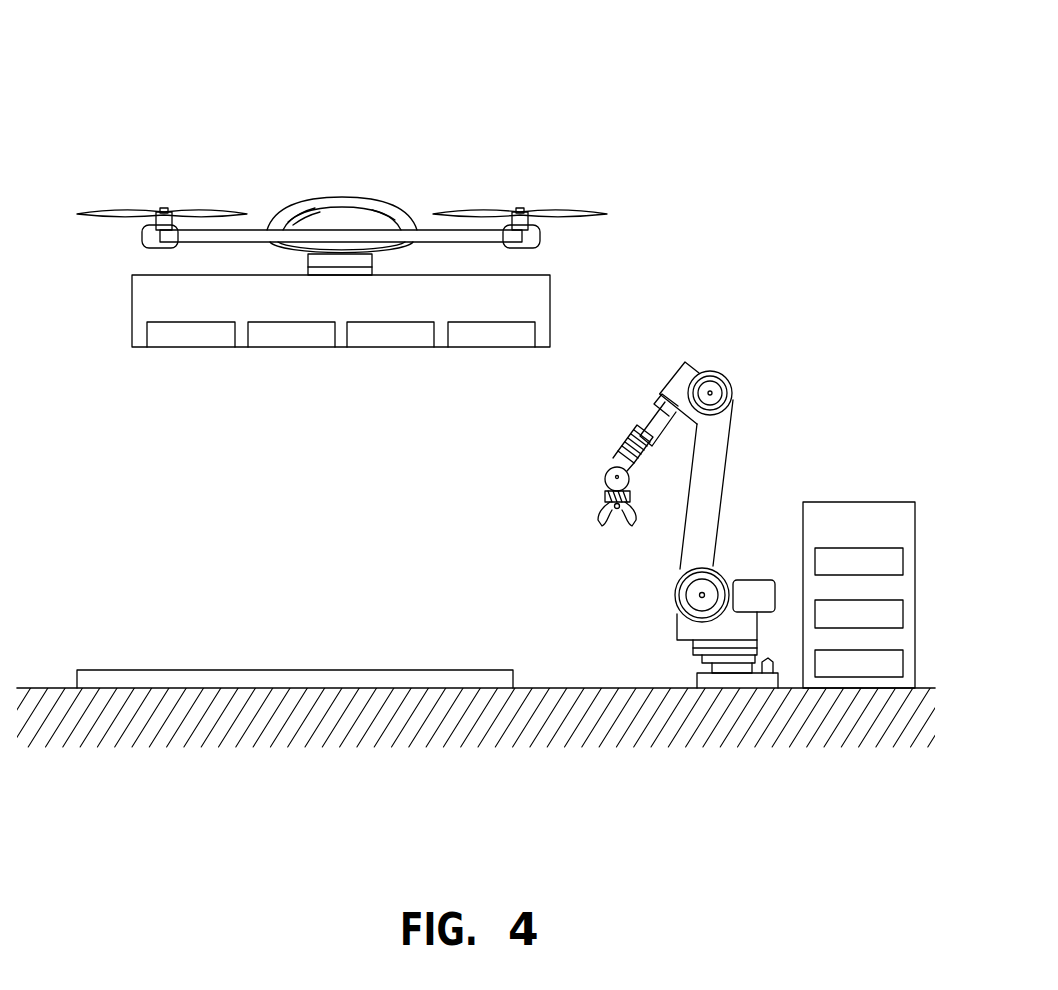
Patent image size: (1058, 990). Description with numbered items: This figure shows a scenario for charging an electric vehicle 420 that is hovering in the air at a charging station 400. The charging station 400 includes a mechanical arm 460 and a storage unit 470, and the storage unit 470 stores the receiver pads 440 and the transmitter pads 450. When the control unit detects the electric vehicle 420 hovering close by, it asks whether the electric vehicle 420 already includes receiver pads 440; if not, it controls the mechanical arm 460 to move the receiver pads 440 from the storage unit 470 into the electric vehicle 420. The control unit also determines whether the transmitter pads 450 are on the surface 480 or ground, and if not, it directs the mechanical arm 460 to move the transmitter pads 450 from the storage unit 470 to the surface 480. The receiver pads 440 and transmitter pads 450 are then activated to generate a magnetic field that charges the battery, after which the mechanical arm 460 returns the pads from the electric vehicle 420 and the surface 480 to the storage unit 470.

The charging station 400 is at (722, 80).
The electric vehicle 420 is at (537, 210).
The receiver pad 440 is at (207, 348).
The transmitter pad 450 is at (300, 670).
The mechanical arm 460 is at (689, 364).
The storage unit 470 is at (862, 502).
The surface 480 is at (540, 688).